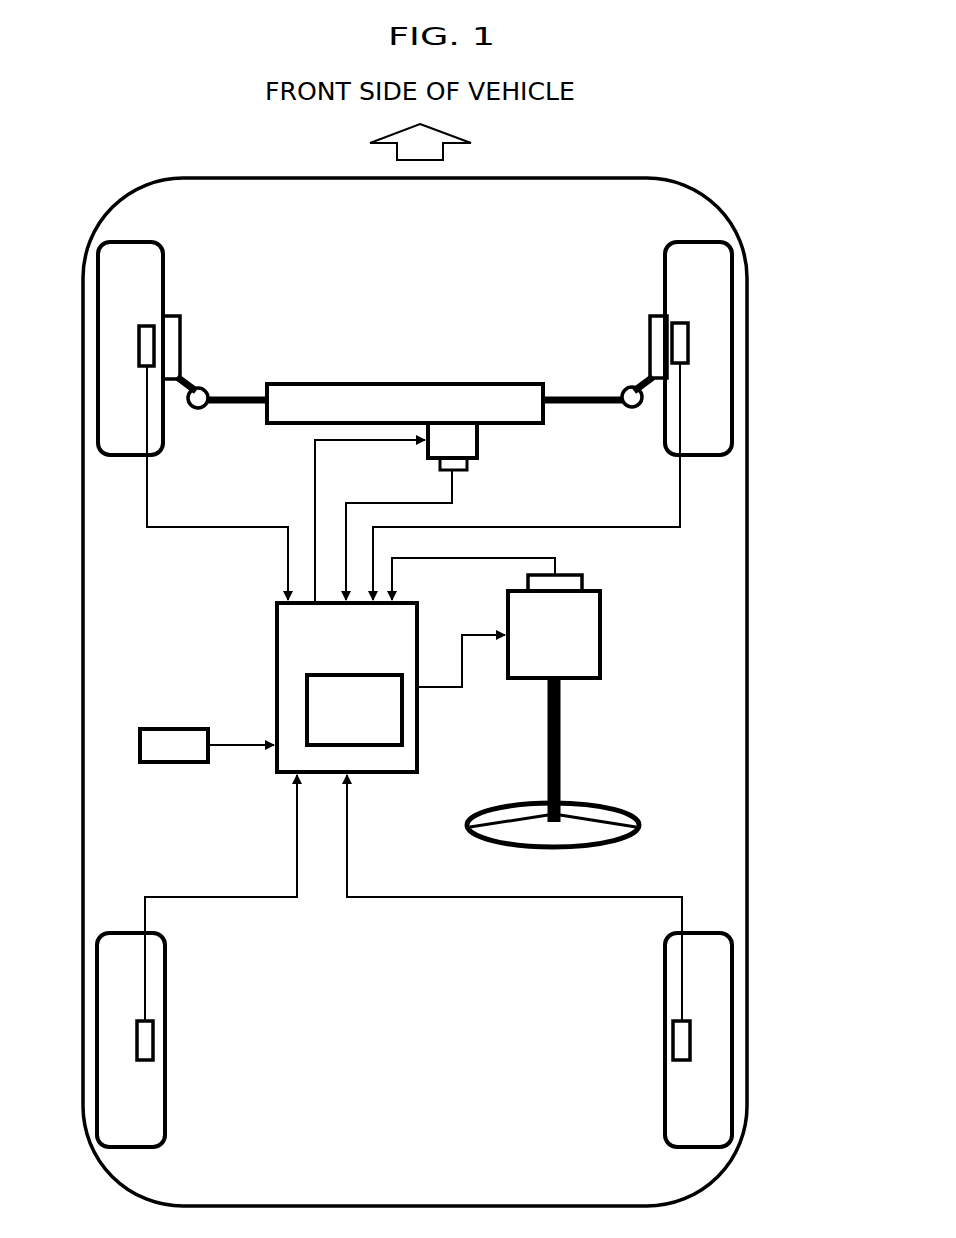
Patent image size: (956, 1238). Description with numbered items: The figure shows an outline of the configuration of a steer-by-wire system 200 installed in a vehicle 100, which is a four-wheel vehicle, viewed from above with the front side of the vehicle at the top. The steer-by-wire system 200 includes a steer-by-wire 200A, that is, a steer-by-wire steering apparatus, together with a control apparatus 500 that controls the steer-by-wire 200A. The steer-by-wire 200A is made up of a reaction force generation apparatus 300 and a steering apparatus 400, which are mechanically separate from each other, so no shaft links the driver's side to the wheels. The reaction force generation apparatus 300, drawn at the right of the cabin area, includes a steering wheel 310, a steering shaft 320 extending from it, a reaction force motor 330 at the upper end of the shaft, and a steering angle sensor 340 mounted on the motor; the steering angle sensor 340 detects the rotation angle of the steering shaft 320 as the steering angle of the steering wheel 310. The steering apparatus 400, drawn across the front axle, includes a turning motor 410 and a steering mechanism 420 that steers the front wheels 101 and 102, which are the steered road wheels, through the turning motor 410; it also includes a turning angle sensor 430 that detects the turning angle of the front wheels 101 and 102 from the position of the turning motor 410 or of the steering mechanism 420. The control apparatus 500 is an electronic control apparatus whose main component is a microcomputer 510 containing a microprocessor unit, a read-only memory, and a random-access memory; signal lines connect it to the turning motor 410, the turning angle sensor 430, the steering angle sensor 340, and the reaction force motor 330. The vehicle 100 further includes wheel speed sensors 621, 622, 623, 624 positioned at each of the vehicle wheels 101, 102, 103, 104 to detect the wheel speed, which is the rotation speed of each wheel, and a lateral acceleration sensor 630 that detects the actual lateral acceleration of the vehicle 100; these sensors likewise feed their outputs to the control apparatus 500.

The vehicle 100 is at (610, 178).
The front wheel 101 is at (708, 242).
The front wheel 102 is at (127, 242).
The vehicle wheel 103 is at (665, 1118).
The vehicle wheel 104 is at (165, 1112).
The steer-by-wire system 200 is at (419, 935).
The steer-by-wire 200A is at (503, 580).
The reaction force generation apparatus 300 is at (603, 710).
The steering wheel 310 is at (597, 852).
The steering shaft 320 is at (562, 768).
The reaction force motor 330 is at (600, 610).
The steering angle sensor 340 is at (582, 576).
The steering apparatus 400 is at (415, 400).
The turning motor 410 is at (478, 438).
The steering mechanism 420 is at (303, 384).
The turning angle sensor 430 is at (468, 466).
The control apparatus 500 is at (327, 687).
The microcomputer 510 is at (403, 718).
The wheel speed sensor 621 is at (678, 325).
The wheel speed sensor 622 is at (150, 328).
The wheel speed sensor 623 is at (673, 1040).
The wheel speed sensor 624 is at (153, 1040).
The lateral acceleration sensor 630 is at (179, 764).